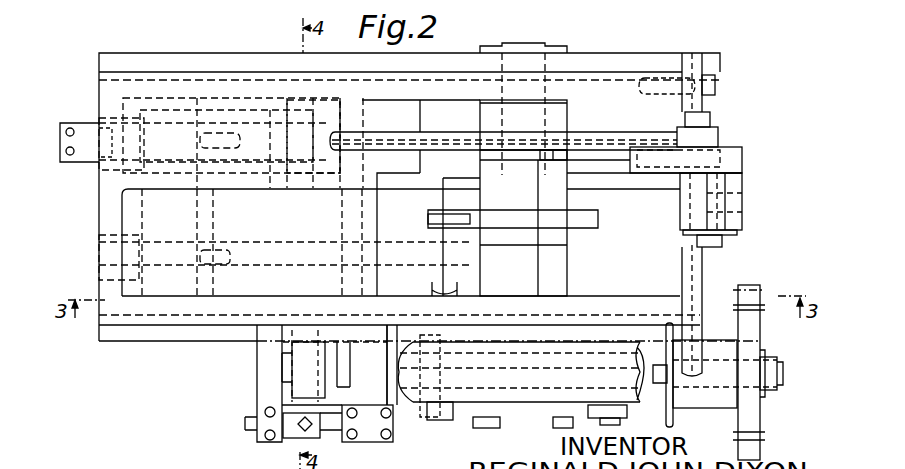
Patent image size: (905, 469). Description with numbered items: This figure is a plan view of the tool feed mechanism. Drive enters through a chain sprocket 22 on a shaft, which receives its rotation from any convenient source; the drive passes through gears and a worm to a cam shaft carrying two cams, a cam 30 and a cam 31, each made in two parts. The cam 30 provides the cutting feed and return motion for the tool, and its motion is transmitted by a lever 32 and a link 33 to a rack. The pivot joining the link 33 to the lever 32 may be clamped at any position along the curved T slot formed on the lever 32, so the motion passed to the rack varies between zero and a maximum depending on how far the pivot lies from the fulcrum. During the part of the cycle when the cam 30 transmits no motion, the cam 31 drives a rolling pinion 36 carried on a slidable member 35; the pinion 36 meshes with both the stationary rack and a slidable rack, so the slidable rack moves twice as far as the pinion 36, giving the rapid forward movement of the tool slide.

The chain sprocket 22 is at (671, 425).
The cam 30 is at (480, 180).
The cam 31 is at (600, 218).
The lever 32 is at (745, 152).
The link 33 is at (616, 124).
The slidable member 35 is at (212, 284).
The rolling pinion 36 is at (282, 108).